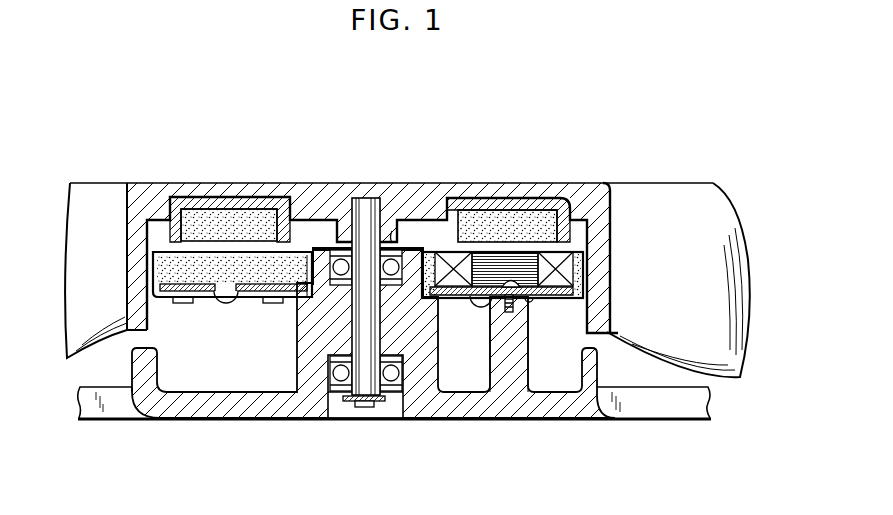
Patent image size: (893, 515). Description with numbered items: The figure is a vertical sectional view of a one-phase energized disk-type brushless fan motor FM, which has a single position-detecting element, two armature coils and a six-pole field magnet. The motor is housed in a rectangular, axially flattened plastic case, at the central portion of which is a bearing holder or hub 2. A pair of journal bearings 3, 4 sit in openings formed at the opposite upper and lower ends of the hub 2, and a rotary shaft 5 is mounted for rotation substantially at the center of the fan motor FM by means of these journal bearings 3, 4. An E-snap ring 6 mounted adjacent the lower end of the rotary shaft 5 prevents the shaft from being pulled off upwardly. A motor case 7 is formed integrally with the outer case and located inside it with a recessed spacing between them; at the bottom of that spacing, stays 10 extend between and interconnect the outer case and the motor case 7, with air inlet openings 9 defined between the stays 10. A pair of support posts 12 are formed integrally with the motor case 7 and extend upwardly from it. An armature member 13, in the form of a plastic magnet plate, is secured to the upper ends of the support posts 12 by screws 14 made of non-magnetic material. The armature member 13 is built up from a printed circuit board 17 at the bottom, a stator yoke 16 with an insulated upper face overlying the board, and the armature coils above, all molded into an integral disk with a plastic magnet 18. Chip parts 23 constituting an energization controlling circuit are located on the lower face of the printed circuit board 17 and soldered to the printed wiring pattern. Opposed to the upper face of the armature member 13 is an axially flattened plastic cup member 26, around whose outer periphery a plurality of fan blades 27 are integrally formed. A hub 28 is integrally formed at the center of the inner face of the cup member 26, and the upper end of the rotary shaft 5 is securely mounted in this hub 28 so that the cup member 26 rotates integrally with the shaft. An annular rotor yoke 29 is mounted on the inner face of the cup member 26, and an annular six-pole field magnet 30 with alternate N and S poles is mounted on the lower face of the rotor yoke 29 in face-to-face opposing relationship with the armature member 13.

The bearing holder or hub 2 is at (298, 345).
The journal bearing 3 is at (337, 248).
The journal bearing 4 is at (338, 419).
The rotary shaft 5 is at (366, 200).
The E-snap ring 6 is at (345, 404).
The motor case 7 is at (594, 421).
The air inlet openings 9 is at (128, 404).
The stays 10 is at (96, 406).
The support posts 12 is at (492, 366).
The armature member 13 is at (578, 252).
The screws 14 is at (516, 299).
The stator yoke 16 is at (142, 243).
The printed circuit board 17 is at (252, 299).
The plastic magnet 18 is at (165, 260).
The chip parts 23 is at (181, 304).
The cup member 26 is at (483, 184).
The fan blades 27 is at (645, 205).
The hub 28 is at (394, 232).
The rotor yoke 29 is at (456, 206).
The field magnet 30 is at (535, 222).
The disk-type brushless fan motor FM is at (475, 122).